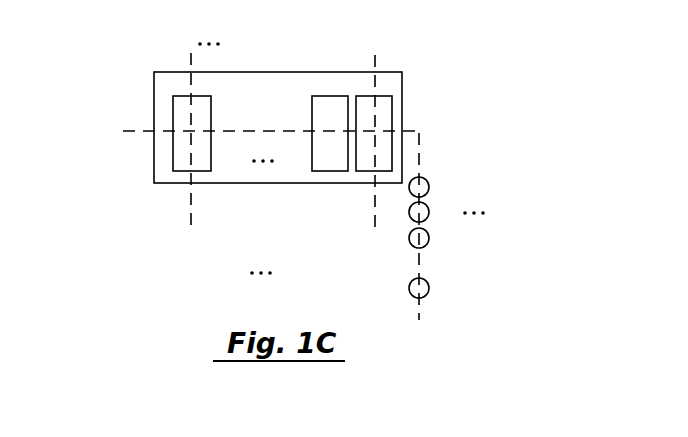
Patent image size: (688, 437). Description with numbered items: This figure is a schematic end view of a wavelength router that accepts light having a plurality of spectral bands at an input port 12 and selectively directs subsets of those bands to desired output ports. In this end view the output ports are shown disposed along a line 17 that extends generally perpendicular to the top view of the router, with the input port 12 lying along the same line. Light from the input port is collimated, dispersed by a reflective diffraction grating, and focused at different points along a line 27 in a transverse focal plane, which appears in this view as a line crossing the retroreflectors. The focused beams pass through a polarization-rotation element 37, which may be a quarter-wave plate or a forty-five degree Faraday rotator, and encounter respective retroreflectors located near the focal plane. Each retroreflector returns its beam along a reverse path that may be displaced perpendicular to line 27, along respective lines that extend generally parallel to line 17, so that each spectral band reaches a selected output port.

The polarization-rotation element 37 is at (154, 107).
The line 27 is at (130, 133).
The line 17 is at (420, 156).
The input port 12 is at (428, 284).